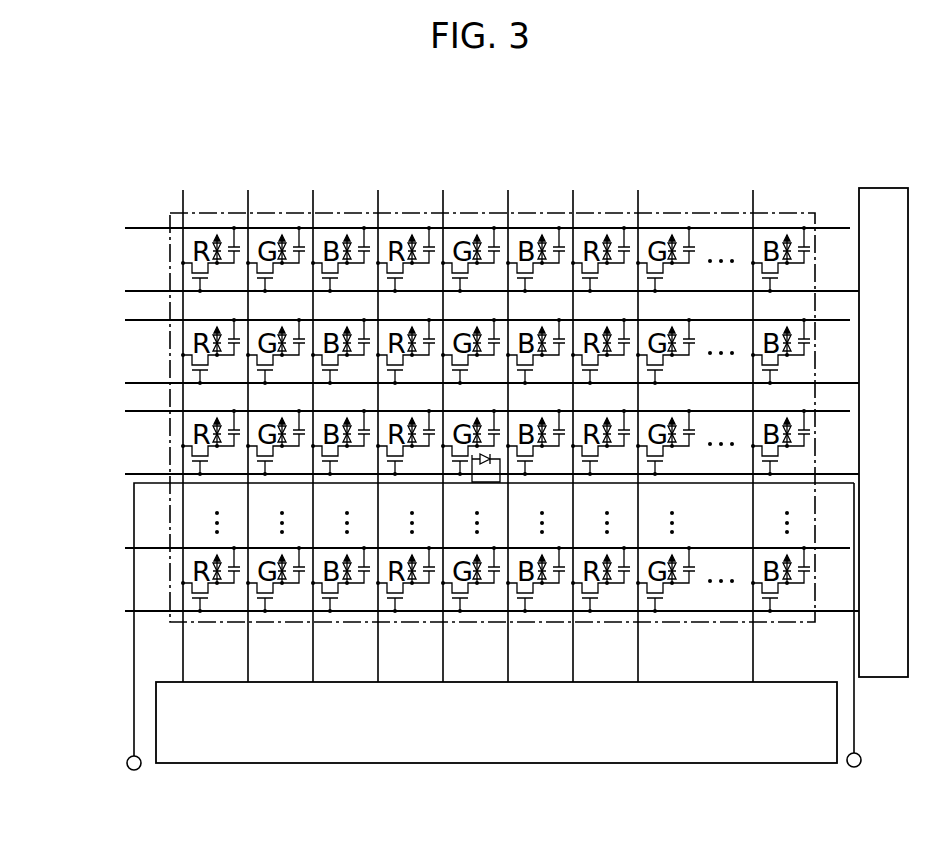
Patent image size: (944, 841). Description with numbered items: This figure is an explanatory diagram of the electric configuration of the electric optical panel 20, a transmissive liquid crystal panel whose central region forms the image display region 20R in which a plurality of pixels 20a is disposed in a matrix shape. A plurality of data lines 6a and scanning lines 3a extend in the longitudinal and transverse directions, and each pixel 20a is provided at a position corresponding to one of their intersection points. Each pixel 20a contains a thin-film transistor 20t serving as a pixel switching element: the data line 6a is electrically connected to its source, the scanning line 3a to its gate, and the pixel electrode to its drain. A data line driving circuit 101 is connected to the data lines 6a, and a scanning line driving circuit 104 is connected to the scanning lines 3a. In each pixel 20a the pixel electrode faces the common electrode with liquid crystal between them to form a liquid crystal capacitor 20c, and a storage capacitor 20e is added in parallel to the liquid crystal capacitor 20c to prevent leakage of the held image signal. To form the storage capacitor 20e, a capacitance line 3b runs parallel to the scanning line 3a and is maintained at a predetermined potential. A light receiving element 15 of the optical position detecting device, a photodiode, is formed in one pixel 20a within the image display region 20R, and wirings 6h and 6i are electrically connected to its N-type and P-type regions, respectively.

The electric optical panel 20 is at (695, 122).
The pixel 20a is at (190, 218).
The thin-film transistor 20t is at (179, 263).
The liquid crystal capacitor 20c is at (212, 237).
The storage capacitor 20e is at (242, 236).
The image display region 20R is at (400, 212).
The scanning line 3a is at (148, 292).
The capacitance line 3b is at (148, 229).
The data line 6a is at (247, 633).
The wiring 6h is at (134, 582).
The wiring 6i is at (854, 712).
The light receiving element 15 is at (486, 466).
The scanning line driving circuit 104 is at (873, 188).
The data line driving circuit 101 is at (750, 764).